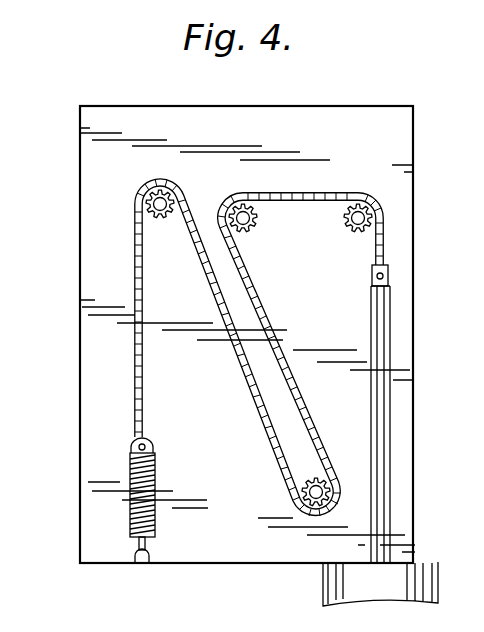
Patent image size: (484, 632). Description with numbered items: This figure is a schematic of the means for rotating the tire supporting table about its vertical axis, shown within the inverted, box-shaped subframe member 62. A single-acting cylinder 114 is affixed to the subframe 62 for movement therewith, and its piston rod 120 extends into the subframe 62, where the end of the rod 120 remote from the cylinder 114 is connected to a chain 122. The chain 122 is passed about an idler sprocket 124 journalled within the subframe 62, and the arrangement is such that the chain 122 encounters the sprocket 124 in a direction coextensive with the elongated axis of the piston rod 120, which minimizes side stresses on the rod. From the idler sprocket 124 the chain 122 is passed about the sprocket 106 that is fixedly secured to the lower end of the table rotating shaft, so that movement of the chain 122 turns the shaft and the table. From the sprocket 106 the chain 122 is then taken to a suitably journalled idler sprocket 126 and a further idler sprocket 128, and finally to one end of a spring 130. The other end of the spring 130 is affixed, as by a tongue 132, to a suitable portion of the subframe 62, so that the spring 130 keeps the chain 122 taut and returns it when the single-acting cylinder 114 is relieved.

The subframe member 62 is at (80, 280).
The sprocket 106 is at (252, 233).
The single-acting cylinder 114 is at (340, 585).
The piston rod 120 is at (371, 335).
The chain 122 is at (380, 230).
The idler sprocket 124 is at (352, 235).
The idler sprocket 126 is at (300, 480).
The idler sprocket 128 is at (165, 222).
The spring 130 is at (156, 478).
The tongue 132 is at (150, 557).